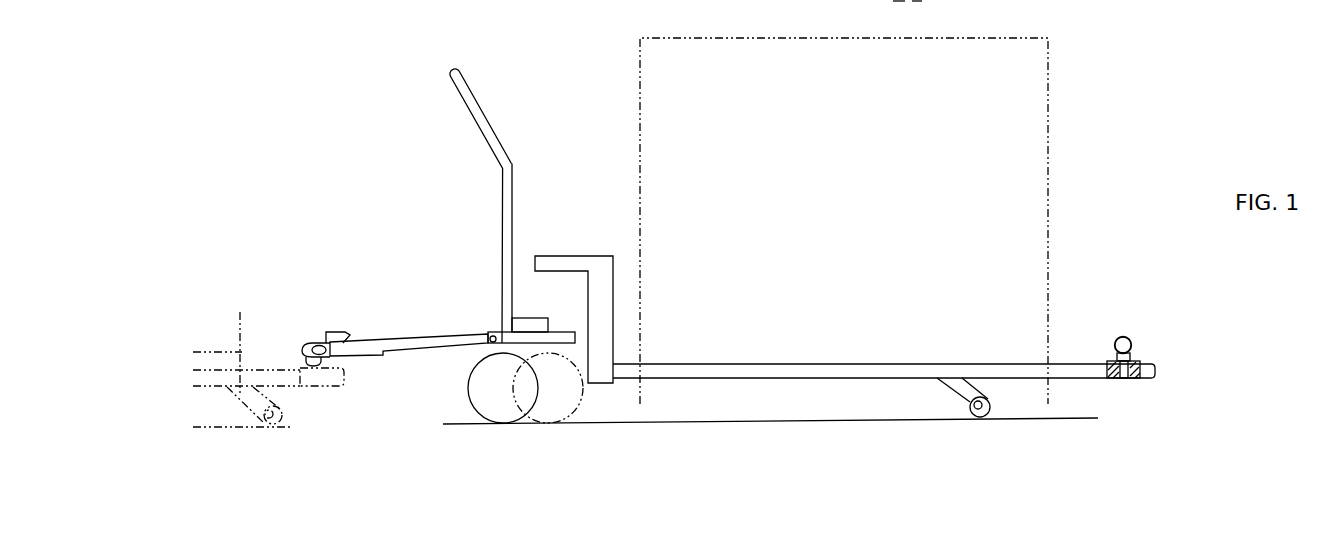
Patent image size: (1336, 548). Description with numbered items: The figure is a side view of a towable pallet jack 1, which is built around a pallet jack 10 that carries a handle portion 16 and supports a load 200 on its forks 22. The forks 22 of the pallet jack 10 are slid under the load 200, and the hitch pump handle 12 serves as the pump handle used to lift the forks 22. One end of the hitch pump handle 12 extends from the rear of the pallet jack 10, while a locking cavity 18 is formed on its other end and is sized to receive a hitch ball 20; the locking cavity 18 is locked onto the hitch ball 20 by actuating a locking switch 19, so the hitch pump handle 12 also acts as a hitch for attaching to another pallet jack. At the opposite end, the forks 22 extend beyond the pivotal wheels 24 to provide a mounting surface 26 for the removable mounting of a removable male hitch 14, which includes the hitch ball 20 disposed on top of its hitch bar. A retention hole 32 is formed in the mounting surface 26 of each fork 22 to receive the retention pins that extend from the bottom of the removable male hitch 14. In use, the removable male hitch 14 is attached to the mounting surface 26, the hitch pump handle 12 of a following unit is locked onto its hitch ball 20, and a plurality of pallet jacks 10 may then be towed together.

The towable pallet jack 1 is at (1117, 112).
The pallet jack 10 is at (540, 232).
The hitch pump handle 12 is at (440, 328).
The removable male hitch 14 is at (313, 365).
The handle portion 16 is at (470, 97).
The locking cavity 18 is at (317, 347).
The locking switch 19 is at (337, 333).
The hitch ball 20 is at (1117, 338).
The forks 22 is at (722, 370).
The pivotal wheels 24 is at (986, 414).
The mounting surface 26 is at (1143, 357).
The retention hole 32 is at (1125, 379).
The load 200 is at (1050, 58).